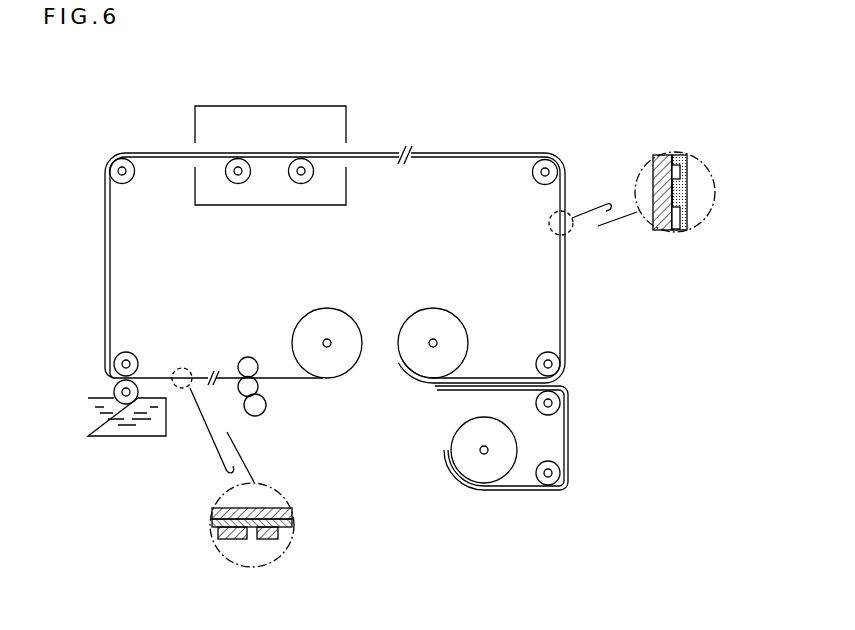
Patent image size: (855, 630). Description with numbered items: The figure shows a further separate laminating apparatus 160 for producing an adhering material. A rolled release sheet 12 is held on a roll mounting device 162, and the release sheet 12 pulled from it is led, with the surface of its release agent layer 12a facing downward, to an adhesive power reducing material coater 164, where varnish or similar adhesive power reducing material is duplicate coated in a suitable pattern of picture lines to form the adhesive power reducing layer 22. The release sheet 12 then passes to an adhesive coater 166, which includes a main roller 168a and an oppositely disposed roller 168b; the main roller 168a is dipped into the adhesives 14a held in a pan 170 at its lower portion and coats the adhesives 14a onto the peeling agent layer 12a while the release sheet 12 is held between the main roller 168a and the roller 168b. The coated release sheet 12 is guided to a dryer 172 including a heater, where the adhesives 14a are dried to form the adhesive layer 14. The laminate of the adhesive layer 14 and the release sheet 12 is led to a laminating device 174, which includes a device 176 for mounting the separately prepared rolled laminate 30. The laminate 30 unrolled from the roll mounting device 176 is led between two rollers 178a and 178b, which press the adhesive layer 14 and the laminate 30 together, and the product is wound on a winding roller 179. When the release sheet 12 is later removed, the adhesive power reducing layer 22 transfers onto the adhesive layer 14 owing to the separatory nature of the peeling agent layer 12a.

The laminating apparatus 160 is at (406, 73).
The release sheet 12 is at (112, 242).
The adhesive layer 14 is at (566, 256).
The adhesives 14a is at (105, 258).
The release agent layer 12a is at (668, 156).
The adhesive power reducing layer 22 is at (682, 172).
The dryer 172 is at (259, 107).
The adhesive coater 166 is at (107, 385).
The main roller 168a is at (141, 389).
The roller 168b is at (157, 343).
The pan 170 is at (88, 434).
The adhesive power reducing material coater 164 is at (265, 413).
The roll mounting device 162 is at (318, 387).
The winding roller 179 is at (433, 350).
The roller 178a is at (543, 356).
The roller 178b is at (536, 404).
The roll mounting device 176 is at (484, 462).
The laminate 30 is at (531, 492).
The laminating device 174 is at (574, 386).